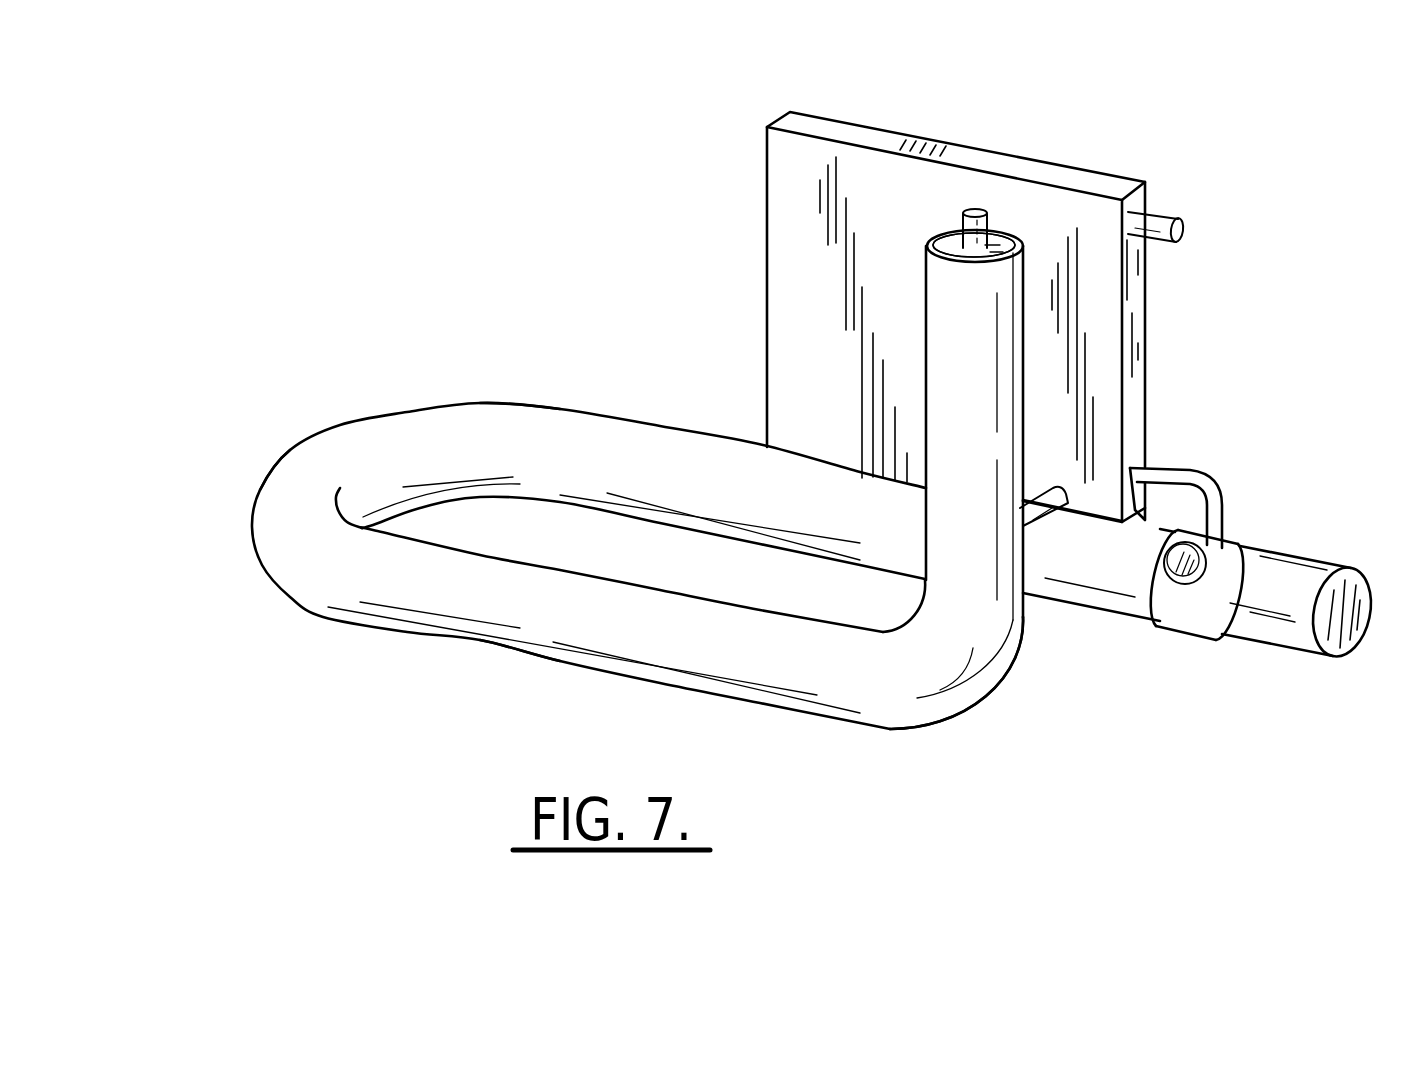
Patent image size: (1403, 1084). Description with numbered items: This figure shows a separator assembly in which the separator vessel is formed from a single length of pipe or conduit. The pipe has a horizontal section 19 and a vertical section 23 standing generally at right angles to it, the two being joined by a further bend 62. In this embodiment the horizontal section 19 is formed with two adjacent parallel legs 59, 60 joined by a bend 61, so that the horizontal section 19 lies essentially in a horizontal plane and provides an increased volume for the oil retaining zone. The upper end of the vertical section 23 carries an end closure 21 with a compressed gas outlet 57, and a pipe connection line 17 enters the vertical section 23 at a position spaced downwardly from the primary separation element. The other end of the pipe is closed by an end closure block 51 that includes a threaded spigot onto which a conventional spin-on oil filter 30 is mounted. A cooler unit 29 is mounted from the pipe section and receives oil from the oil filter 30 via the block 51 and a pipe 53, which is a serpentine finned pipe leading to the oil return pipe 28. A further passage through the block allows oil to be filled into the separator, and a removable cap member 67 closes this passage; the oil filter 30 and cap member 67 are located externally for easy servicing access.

The pipe connection line 17 is at (1043, 517).
The horizontal section 19 is at (1028, 705).
The end closure 21 is at (948, 245).
The vertical section 23 is at (967, 317).
The oil return pipe 28 is at (1166, 220).
The cooler unit 29 is at (1080, 122).
The oil filter 30 is at (1285, 608).
The end closure block 51 is at (1182, 600).
The pipe 53 is at (1196, 471).
The compressed gas outlet 57 is at (975, 210).
The leg 59 is at (623, 472).
The leg 60 is at (527, 627).
The bend 61 is at (362, 468).
The bend 62 is at (940, 688).
The removable cap member 67 is at (1200, 550).